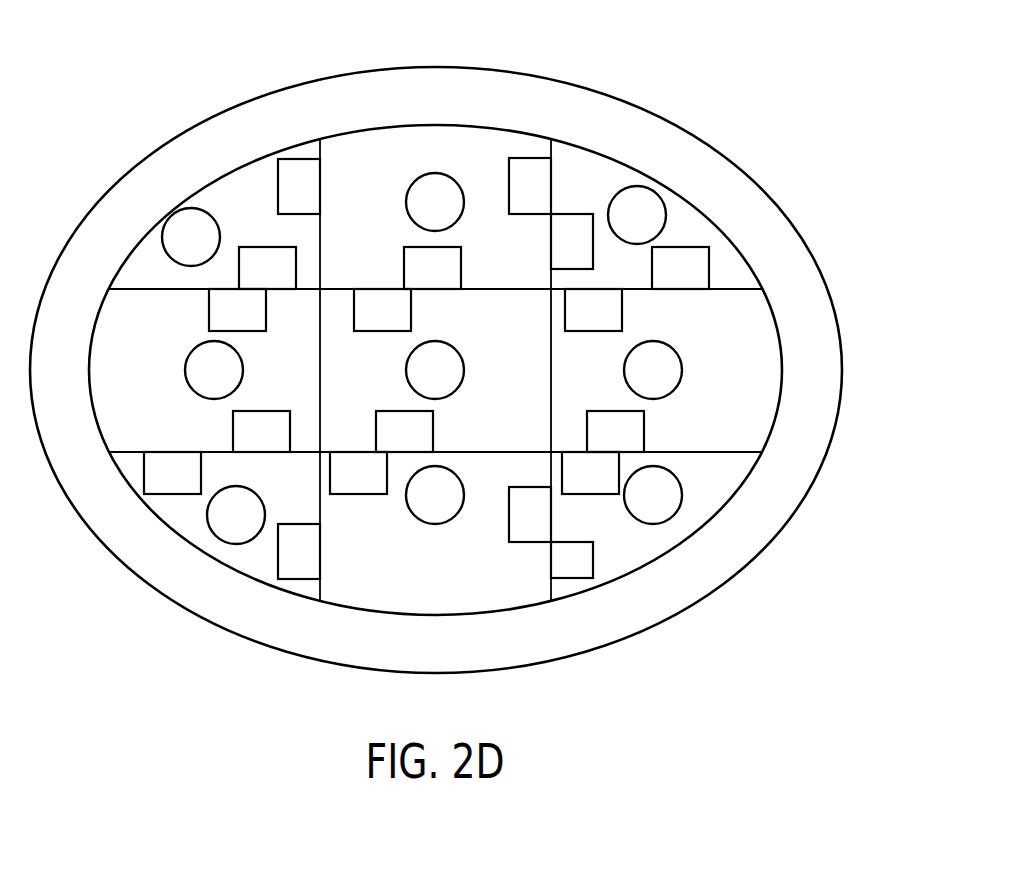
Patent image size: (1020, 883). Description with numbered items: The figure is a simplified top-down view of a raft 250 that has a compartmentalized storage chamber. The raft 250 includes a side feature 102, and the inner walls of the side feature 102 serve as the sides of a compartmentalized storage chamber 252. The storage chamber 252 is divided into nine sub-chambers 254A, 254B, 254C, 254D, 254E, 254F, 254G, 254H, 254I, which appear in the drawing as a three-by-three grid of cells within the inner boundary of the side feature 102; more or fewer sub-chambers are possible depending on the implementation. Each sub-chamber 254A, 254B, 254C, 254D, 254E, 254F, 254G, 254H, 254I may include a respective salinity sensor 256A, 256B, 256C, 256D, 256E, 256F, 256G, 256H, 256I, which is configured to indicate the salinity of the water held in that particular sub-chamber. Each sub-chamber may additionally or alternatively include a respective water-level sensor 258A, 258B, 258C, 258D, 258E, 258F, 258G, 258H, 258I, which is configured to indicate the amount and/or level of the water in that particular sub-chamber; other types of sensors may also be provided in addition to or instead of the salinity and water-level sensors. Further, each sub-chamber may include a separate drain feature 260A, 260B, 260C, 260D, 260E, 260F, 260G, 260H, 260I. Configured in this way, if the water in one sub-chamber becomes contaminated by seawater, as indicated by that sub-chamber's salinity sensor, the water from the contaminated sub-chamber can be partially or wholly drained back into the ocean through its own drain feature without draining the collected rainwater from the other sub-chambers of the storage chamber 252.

The side feature 102 is at (750, 540).
The raft 250 is at (695, 82).
The compartmentalized storage chamber 252 is at (582, 147).
The sub-chamber 254A is at (223, 209).
The sub-chamber 254B is at (337, 182).
The sub-chamber 254C is at (565, 192).
The sub-chamber 254D is at (116, 340).
The sub-chamber 254E is at (492, 382).
The sub-chamber 254F is at (711, 357).
The sub-chamber 254G is at (264, 491).
The sub-chamber 254H is at (361, 544).
The sub-chamber 254I is at (647, 556).
The salinity sensor 256A is at (289, 281).
The salinity sensor 256B is at (454, 281).
The salinity sensor 256C is at (702, 281).
The salinity sensor 256D is at (283, 444).
The salinity sensor 256E is at (426, 444).
The salinity sensor 256F is at (637, 444).
The salinity sensor 256G is at (194, 486).
The salinity sensor 256H is at (380, 486).
The salinity sensor 256I is at (573, 486).
The water-level sensor 258A is at (297, 170).
The water-level sensor 258B is at (522, 168).
The water-level sensor 258C is at (565, 250).
The water-level sensor 258D is at (259, 323).
The water-level sensor 258E is at (404, 323).
The water-level sensor 258F is at (615, 323).
The water-level sensor 258G is at (293, 567).
The water-level sensor 258H is at (527, 525).
The water-level sensor 258I is at (578, 568).
The drain feature 260A is at (169, 250).
The drain feature 260B is at (413, 215).
The drain feature 260C is at (615, 228).
The drain feature 260D is at (192, 383).
The drain feature 260E is at (413, 383).
The drain feature 260F is at (631, 383).
The drain feature 260G is at (214, 528).
The drain feature 260H is at (413, 508).
The drain feature 260I is at (634, 508).